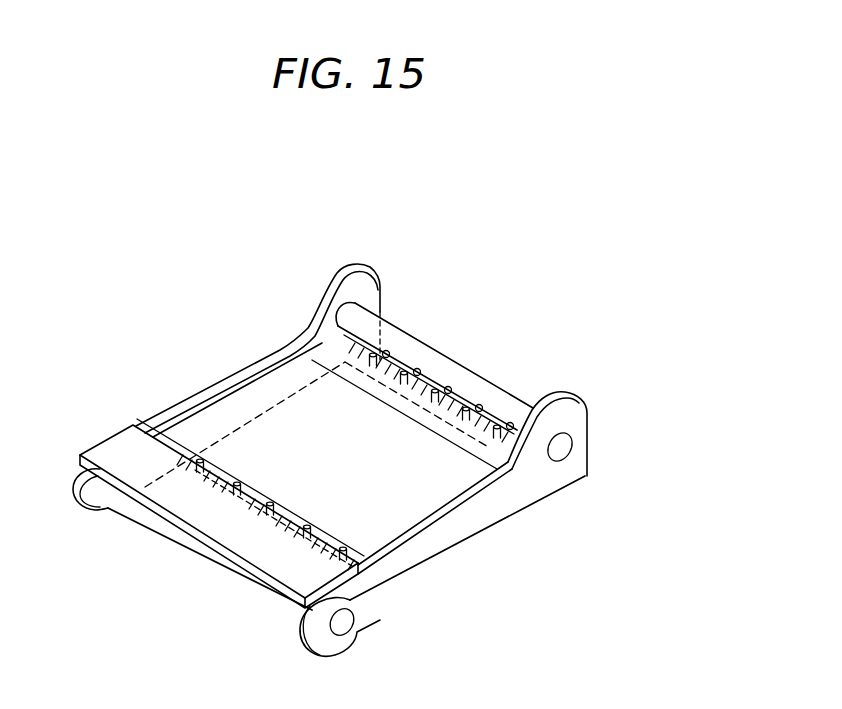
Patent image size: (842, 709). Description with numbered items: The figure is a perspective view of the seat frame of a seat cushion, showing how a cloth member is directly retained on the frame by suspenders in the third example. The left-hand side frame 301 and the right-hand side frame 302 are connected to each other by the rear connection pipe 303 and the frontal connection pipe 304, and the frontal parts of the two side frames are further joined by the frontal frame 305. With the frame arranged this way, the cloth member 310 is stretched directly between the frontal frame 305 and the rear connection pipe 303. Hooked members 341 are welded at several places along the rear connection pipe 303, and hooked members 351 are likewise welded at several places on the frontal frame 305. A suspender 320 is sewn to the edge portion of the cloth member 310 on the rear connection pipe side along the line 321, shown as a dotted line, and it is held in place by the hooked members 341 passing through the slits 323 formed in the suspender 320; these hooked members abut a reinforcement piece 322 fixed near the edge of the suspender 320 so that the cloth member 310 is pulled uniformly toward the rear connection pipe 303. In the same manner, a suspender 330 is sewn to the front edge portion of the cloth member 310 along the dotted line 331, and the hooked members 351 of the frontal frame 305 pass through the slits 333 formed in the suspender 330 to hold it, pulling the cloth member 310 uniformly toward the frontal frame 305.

The left-hand side frame 301 is at (350, 261).
The right-hand side frame 302 is at (582, 396).
The rear connection pipe 303 is at (400, 326).
The frontal connection pipe 304 is at (343, 626).
The frontal frame 305 is at (255, 541).
The cloth member 310 is at (405, 503).
The suspender 320 is at (495, 450).
The line 321 is at (467, 450).
The reinforcement piece 322 is at (430, 378).
The slits 323 is at (492, 452).
The suspender 330 is at (216, 481).
The line 331 is at (260, 499).
The slits 333 is at (305, 572).
The hooked members 341 is at (433, 375).
The hooked members 351 is at (304, 541).